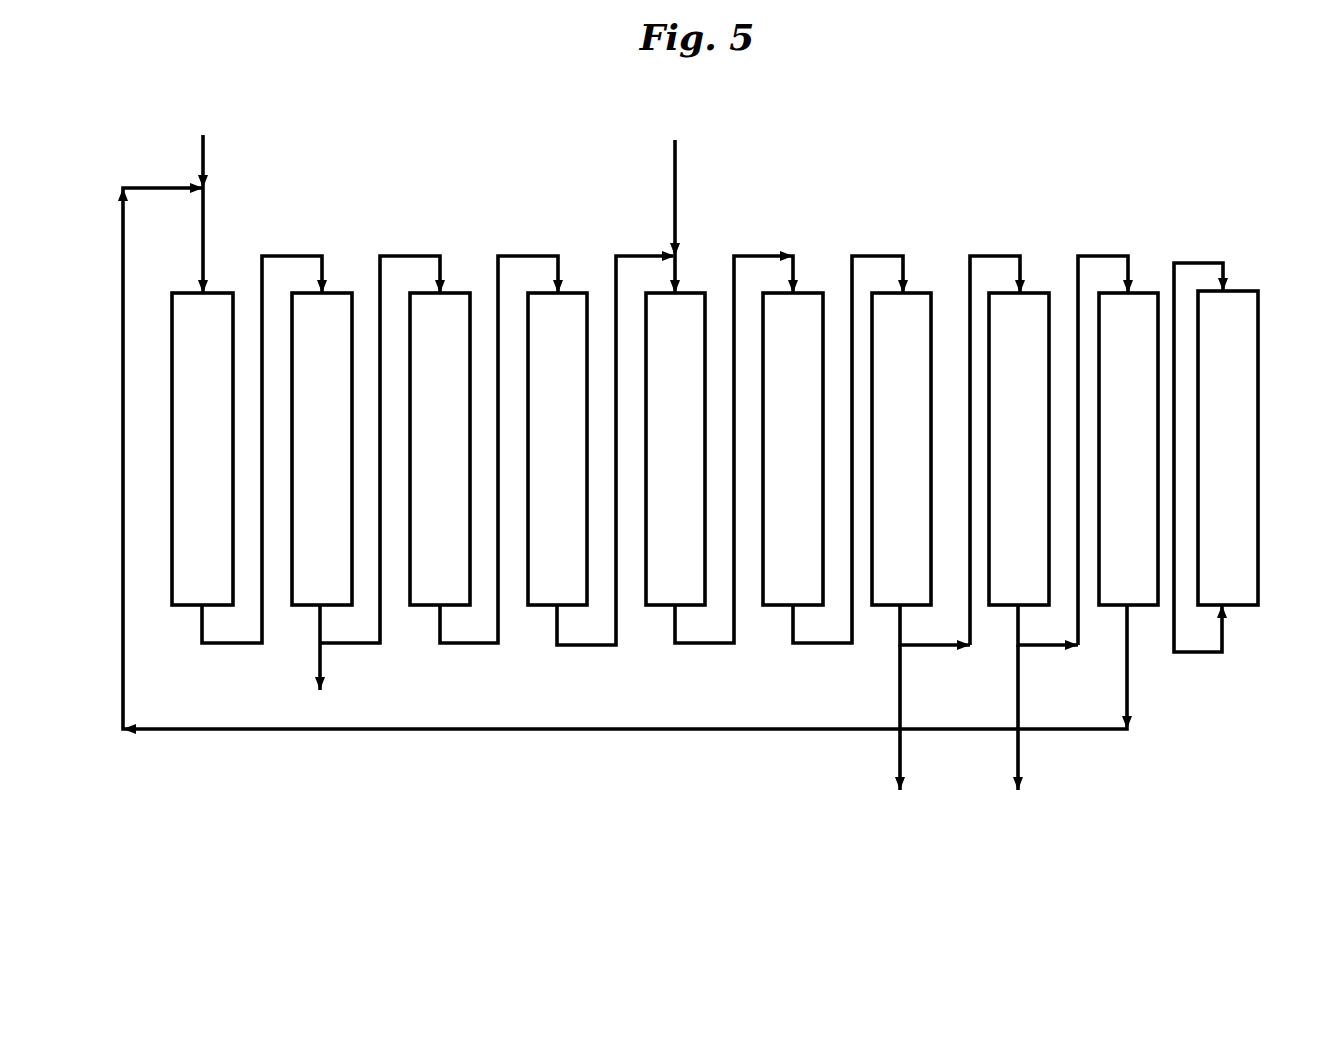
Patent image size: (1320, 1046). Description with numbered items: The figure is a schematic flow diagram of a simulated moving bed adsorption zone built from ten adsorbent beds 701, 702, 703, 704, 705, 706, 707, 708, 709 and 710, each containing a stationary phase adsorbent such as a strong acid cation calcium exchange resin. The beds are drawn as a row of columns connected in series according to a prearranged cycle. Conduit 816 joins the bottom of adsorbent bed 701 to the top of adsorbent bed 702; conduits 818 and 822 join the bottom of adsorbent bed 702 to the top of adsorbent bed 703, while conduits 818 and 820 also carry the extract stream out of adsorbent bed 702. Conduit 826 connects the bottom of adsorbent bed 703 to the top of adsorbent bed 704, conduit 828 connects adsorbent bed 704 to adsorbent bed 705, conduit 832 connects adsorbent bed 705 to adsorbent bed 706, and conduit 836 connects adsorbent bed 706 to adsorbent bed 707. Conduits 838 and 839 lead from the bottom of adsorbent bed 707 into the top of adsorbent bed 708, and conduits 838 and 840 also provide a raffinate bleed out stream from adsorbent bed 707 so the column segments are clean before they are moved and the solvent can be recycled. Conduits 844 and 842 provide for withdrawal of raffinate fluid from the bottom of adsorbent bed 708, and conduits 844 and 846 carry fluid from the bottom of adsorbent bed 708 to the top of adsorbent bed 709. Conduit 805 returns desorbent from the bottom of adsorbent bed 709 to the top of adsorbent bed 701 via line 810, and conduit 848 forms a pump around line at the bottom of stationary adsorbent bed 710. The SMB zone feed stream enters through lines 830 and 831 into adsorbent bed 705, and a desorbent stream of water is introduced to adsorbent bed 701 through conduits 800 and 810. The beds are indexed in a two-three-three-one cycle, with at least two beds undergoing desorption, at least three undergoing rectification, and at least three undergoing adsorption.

The adsorbent bed 701 is at (202, 449).
The adsorbent bed 702 is at (322, 449).
The adsorbent bed 703 is at (440, 449).
The adsorbent bed 704 is at (557, 449).
The adsorbent bed 705 is at (675, 449).
The adsorbent bed 706 is at (793, 449).
The adsorbent bed 707 is at (901, 449).
The adsorbent bed 708 is at (1019, 449).
The adsorbent bed 709 is at (1128, 449).
The stationary adsorbent bed 710 is at (1228, 448).
The conduit 800 is at (203, 157).
The conduit 805 is at (338, 729).
The line 810 is at (203, 252).
The conduit 816 is at (242, 641).
The conduit 818 is at (317, 633).
The conduit 820 is at (322, 667).
The conduit 822 is at (422, 253).
The conduit 826 is at (507, 253).
The conduit 828 is at (628, 253).
The line 830 is at (672, 233).
The line 831 is at (678, 262).
The conduit 832 is at (690, 647).
The conduit 836 is at (793, 647).
The conduit 838 is at (893, 628).
The conduit 839 is at (1022, 255).
The conduit 840 is at (900, 758).
The conduit 842 is at (1018, 758).
The conduit 844 is at (1017, 635).
The conduit 846 is at (1108, 257).
The conduit 848 is at (1187, 262).